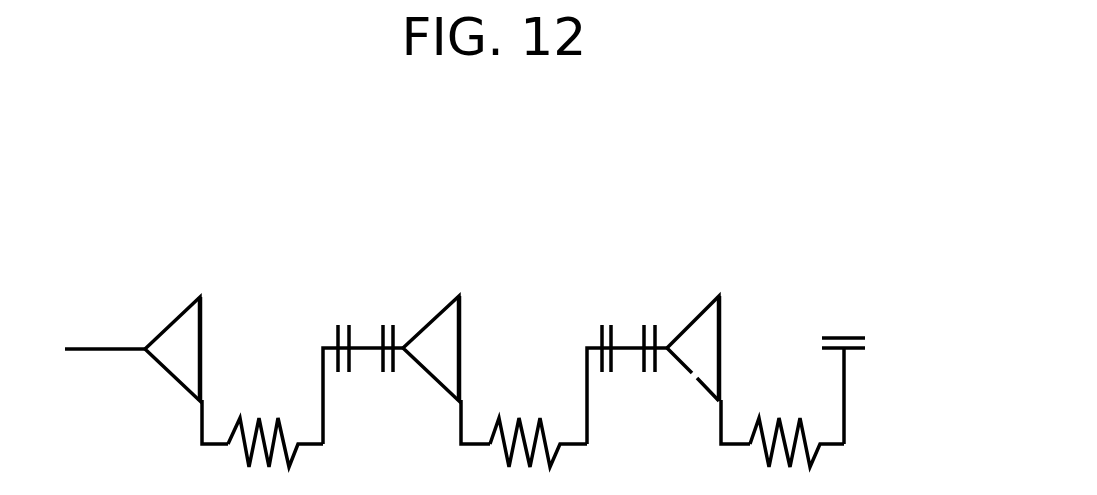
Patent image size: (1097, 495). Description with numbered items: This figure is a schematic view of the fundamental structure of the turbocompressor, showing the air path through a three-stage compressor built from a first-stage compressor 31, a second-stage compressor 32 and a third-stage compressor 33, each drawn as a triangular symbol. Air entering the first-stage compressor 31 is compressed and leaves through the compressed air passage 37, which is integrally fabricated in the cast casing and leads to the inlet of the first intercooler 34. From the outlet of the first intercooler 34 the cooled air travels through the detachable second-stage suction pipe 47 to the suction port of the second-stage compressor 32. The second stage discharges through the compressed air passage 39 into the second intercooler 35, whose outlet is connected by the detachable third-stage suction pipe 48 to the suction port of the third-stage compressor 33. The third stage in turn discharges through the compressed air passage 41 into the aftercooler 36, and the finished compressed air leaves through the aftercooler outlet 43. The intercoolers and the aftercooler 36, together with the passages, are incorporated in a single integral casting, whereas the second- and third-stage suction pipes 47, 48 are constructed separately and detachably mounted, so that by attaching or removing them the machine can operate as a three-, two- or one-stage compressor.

The first-stage compressor 31 is at (178, 313).
The second-stage compressor 32 is at (435, 310).
The third-stage compressor 33 is at (702, 308).
The first intercooler 34 is at (260, 418).
The second intercooler 35 is at (520, 420).
The aftercooler 36 is at (780, 418).
The compressed air passage 37 is at (202, 423).
The compressed air passage 39 is at (462, 420).
The compressed air passage 41 is at (722, 418).
The aftercooler outlet 43 is at (845, 337).
The second-stage suction pipe 47 is at (368, 345).
The third-stage suction pipe 48 is at (628, 343).